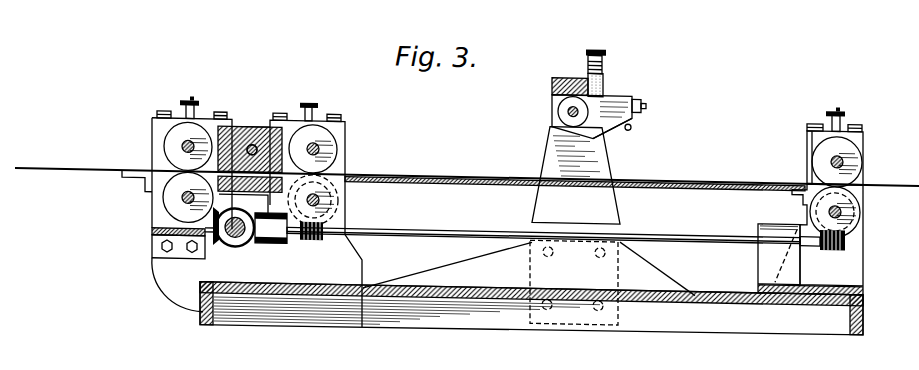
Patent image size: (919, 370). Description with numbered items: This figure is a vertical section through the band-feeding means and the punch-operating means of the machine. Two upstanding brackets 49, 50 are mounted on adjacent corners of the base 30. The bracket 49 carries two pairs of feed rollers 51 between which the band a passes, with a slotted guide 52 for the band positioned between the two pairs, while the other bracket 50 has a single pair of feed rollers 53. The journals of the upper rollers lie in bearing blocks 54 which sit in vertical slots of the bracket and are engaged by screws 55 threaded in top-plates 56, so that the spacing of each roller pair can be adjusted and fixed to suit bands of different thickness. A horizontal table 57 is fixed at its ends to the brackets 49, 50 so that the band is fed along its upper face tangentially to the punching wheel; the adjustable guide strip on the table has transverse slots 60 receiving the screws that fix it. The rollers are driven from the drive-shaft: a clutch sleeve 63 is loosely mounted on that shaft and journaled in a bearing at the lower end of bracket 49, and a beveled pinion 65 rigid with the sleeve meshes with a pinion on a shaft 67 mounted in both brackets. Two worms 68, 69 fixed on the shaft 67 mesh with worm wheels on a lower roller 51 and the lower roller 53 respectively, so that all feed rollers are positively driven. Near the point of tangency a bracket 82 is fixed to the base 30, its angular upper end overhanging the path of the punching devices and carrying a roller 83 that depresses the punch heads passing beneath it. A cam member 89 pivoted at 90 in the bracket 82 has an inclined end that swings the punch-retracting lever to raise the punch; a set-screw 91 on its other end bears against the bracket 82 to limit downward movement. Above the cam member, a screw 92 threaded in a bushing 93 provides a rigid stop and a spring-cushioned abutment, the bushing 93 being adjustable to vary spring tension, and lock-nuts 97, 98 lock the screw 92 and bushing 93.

The band a is at (62, 172).
The base 30 is at (513, 302).
The upstanding bracket 49 is at (172, 274).
The upstanding bracket 50 is at (856, 250).
The feed rollers 51 is at (177, 174).
The slotted guide 52 is at (236, 135).
The feed rollers 53 is at (862, 173).
The bearing blocks 54 is at (152, 122).
The screws 55 is at (203, 94).
The top-plates 56 is at (209, 114).
The horizontal table 57 is at (494, 171).
The transverse slots 60 is at (221, 243).
The clutch sleeve 63 is at (243, 238).
The beveled pinion 65 is at (245, 211).
The shaft 67 is at (383, 226).
The worm 68 is at (311, 235).
The worm 69 is at (833, 233).
The bracket 82 is at (553, 144).
The roller 83 is at (563, 97).
The cam member 89 is at (611, 120).
The pivot 90 is at (630, 105).
The set-screw 91 is at (637, 91).
The screw 92 is at (605, 41).
The bushing 93 is at (588, 56).
The lock-nut 97 is at (609, 53).
The lock-nut 98 is at (602, 69).